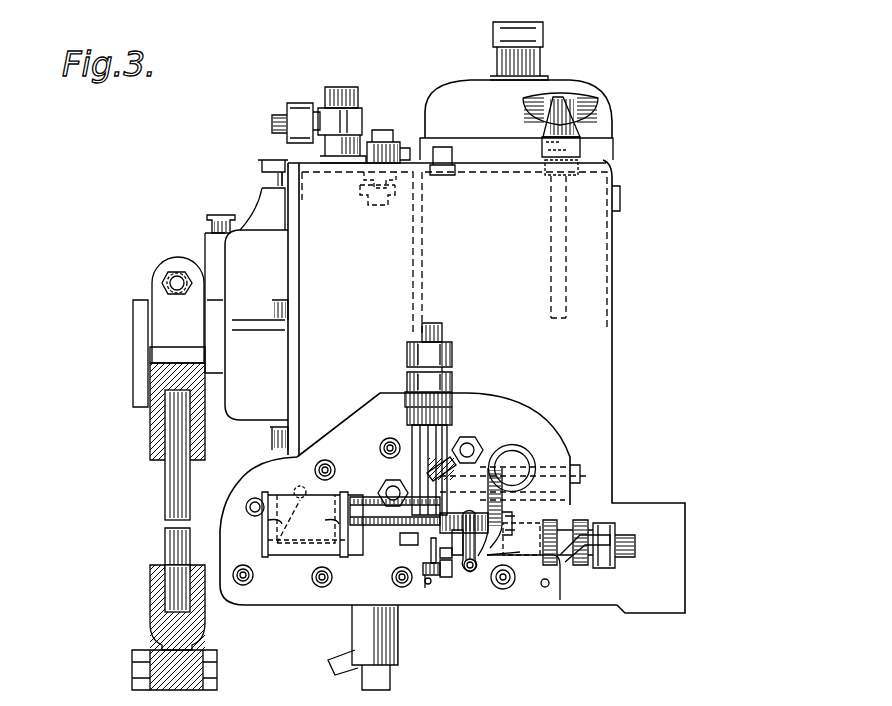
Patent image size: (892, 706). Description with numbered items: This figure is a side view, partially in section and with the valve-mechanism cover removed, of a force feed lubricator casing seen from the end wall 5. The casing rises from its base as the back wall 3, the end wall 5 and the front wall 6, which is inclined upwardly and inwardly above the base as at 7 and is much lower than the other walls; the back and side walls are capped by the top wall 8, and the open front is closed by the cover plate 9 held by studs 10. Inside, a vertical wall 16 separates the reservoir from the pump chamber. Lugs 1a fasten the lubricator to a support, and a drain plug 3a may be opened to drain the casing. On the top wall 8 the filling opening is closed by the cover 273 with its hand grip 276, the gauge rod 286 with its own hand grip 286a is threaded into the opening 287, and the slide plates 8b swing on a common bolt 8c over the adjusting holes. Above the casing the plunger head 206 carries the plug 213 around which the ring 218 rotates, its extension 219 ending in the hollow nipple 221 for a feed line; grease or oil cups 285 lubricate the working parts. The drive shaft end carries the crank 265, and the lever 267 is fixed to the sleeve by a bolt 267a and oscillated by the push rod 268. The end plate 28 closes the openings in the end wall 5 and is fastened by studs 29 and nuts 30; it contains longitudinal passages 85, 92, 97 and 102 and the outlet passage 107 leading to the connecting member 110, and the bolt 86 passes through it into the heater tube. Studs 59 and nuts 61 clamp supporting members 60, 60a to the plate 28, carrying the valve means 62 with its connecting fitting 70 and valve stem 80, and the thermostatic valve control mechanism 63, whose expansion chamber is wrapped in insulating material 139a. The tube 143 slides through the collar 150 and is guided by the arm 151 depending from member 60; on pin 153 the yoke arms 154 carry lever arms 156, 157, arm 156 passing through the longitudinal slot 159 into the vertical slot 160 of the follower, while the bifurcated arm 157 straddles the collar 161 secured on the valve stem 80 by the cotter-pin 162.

The side or end wall 5 is at (600, 352).
The back wall 3 is at (620, 225).
The vertical wall 16 is at (413, 262).
The slide plates 8b is at (388, 175).
The cover 273 is at (612, 127).
The hand grip 276 is at (543, 32).
The hand grip 286a is at (592, 97).
The opening 287 is at (545, 178).
The gauge rod 286 is at (612, 267).
The common bolt 8c is at (400, 142).
The head 206 is at (385, 142).
The plug 213 is at (355, 88).
The extension 219 is at (318, 112).
The ring 218 is at (360, 125).
The hollow nipple 221 is at (278, 125).
The cover plate 9 is at (262, 218).
The grease or oil cups 285 is at (207, 218).
The bolt 267a is at (160, 276).
The crank 265 is at (140, 363).
The lever 267 is at (162, 472).
The push rod 268 is at (148, 692).
The drain plug 3a is at (350, 630).
The lugs 1a is at (670, 590).
The outlet passage 107 is at (548, 588).
The inclined portion of front wall 7 is at (247, 467).
The top wall 8 is at (250, 490).
The front wall 6 is at (225, 522).
The studs 10 is at (307, 408).
The passage 102 is at (334, 619).
The connecting fitting 70 is at (442, 334).
The valve means 62 is at (455, 400).
The supporting member 60 is at (418, 475).
The nuts 61 is at (470, 432).
The studs 59 is at (462, 447).
The bolt 86 is at (520, 455).
The longitudinal passage 85 is at (555, 458).
The longitudinal passage 92 is at (588, 487).
The arm 151 is at (572, 530).
The vertical slot 160 is at (515, 518).
The supporting member 60a is at (395, 520).
The connecting member 110 is at (627, 560).
The pin 153 is at (474, 575).
The arms 154 is at (455, 560).
The lever arm 156 is at (437, 578).
The lever arm 157 is at (447, 580).
The cotter-pin 162 is at (430, 580).
The collar 161 is at (424, 590).
The longitudinal slot 159 is at (505, 590).
The valve stem 80 is at (412, 547).
The tube 143 is at (393, 576).
The collar 150 is at (352, 566).
The thermostatic valve control mechanism 63 is at (318, 533).
The insulating material 139a is at (300, 485).
The passage 97 is at (312, 462).
The nuts 30 is at (328, 460).
The studs 29 is at (390, 438).
The end plate 28 is at (350, 462).